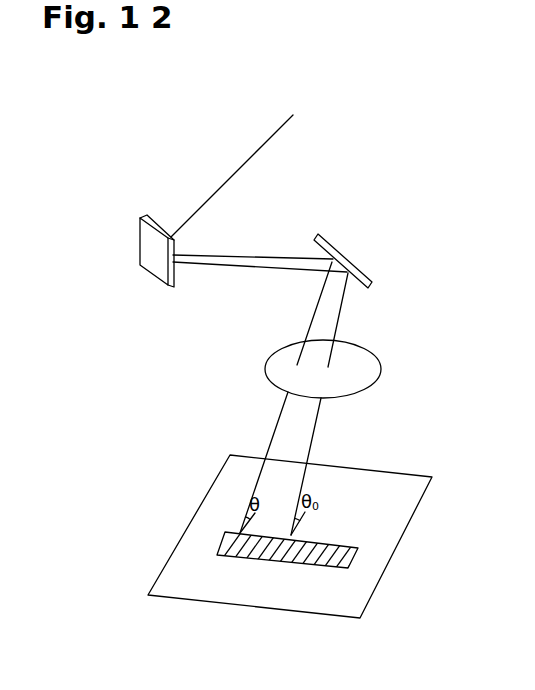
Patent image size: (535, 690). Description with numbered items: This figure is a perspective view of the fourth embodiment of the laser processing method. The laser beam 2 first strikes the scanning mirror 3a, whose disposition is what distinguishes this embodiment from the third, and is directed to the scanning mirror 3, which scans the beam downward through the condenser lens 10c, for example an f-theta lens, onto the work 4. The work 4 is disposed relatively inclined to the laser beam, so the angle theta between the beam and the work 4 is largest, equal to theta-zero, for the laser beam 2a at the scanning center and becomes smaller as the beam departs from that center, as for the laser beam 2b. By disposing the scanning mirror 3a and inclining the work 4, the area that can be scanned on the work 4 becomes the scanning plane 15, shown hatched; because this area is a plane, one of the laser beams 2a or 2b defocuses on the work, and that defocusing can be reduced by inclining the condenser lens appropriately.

The laser beam 2 is at (262, 147).
The laser beam at the scanning center 2a is at (315, 435).
The laser beam 2b is at (273, 427).
The scanning mirror 3 is at (323, 243).
The scanning mirror 3a is at (148, 255).
The work 4 is at (323, 603).
The condenser lens 10c is at (363, 365).
The scanning plane 15 is at (347, 560).